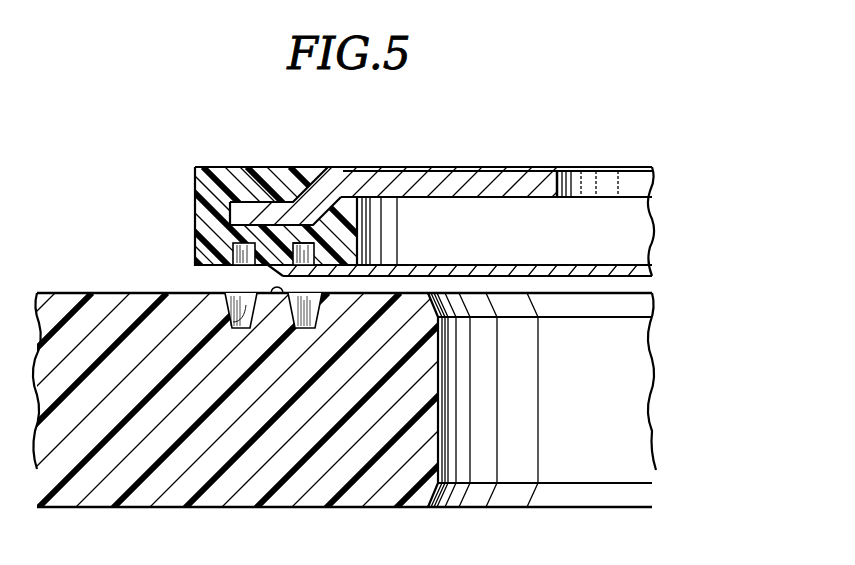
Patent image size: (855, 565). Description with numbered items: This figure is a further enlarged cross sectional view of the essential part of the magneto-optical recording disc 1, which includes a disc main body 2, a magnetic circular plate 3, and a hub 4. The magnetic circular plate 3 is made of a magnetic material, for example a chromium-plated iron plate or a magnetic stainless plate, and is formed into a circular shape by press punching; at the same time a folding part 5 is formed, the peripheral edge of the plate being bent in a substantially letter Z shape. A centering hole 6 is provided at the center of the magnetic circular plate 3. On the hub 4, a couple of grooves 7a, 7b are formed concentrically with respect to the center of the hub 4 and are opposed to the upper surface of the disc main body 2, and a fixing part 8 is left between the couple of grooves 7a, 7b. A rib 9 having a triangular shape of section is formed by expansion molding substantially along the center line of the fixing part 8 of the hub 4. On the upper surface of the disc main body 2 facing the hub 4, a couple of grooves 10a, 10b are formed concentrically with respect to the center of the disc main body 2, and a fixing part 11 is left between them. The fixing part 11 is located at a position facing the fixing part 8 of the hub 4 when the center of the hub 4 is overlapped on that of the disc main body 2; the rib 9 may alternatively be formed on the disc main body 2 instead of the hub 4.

The magneto-optical recording disc 1 is at (118, 220).
The disc main body 2 is at (92, 293).
The magnetic circular plate 3 is at (392, 168).
The hub 4 is at (234, 167).
The folding part 5 is at (327, 184).
The centering hole 6 is at (563, 184).
The groove 7a is at (233, 251).
The groove 7b is at (313, 266).
The fixing part 8 is at (296, 257).
The rib 9 is at (279, 272).
The groove 10a is at (248, 330).
The groove 10b is at (308, 330).
The fixing part 11 is at (284, 300).